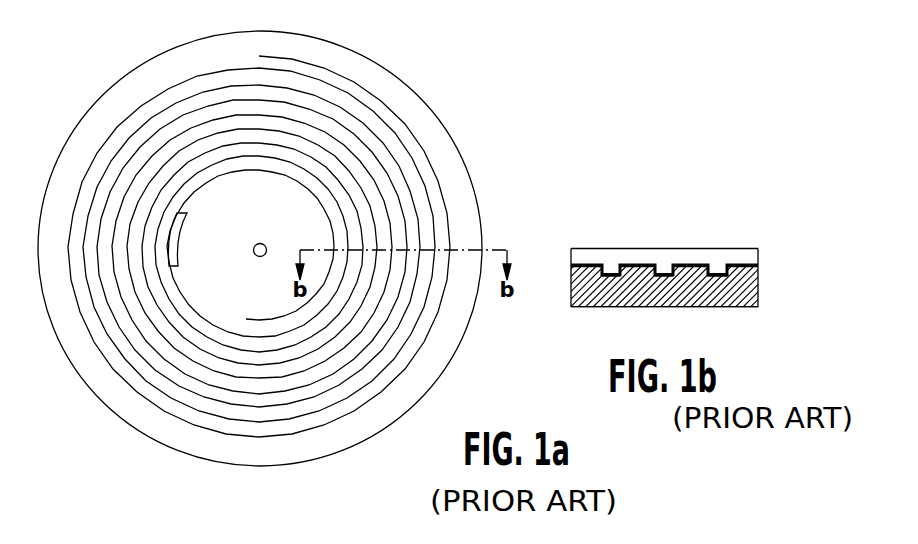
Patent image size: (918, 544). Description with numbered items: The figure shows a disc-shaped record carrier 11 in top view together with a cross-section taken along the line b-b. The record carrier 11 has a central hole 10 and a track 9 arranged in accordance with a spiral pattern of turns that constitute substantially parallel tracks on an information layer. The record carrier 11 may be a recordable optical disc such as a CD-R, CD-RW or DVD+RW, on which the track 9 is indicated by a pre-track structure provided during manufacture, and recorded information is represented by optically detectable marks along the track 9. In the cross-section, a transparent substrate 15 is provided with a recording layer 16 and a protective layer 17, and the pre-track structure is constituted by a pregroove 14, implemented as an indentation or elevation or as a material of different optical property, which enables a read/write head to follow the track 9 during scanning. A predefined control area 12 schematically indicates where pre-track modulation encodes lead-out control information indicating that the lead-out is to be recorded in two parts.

In FIG. 1a, the track 9 is at (140, 105).
In FIG. 1a, the central hole 10 is at (258, 243).
In FIG. 1a, the record carrier 11 is at (460, 109).
In FIG. 1b, the record carrier 11 is at (556, 225).
In FIG. 1a, the control area 12 is at (182, 249).
In FIG. 1b, the pregroove 14 is at (668, 277).
In FIG. 1b, the transparent substrate 15 is at (587, 307).
In FIG. 1b, the recording layer 16 is at (697, 263).
In FIG. 1b, the protective layer 17 is at (662, 255).